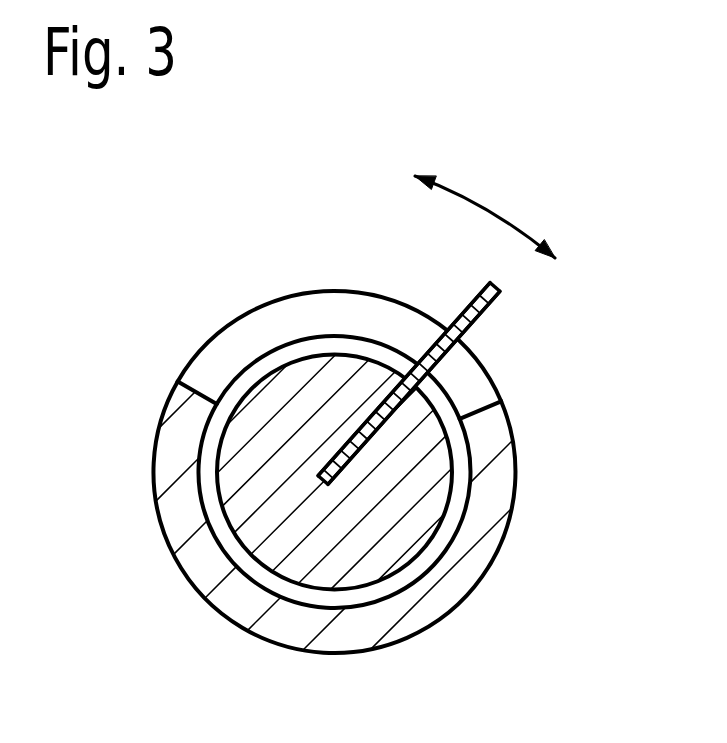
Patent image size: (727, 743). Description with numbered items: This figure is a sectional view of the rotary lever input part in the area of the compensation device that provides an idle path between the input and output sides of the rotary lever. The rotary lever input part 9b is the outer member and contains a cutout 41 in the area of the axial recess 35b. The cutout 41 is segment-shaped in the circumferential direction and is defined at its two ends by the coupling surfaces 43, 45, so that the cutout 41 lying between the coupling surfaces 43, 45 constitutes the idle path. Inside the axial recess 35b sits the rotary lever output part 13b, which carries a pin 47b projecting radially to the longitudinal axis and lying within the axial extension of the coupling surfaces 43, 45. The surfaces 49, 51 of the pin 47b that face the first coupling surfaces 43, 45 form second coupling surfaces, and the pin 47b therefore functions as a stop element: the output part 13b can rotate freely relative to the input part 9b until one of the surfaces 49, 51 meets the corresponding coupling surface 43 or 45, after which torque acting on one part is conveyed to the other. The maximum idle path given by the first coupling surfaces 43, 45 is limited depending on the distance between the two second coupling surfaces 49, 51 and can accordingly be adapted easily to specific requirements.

The rotary lever input part 9b is at (519, 488).
The rotary lever output part 13b is at (330, 567).
The axial recess 35b is at (442, 537).
The cutout 41 is at (272, 313).
The coupling surface 43 is at (202, 392).
The coupling surface 45 is at (483, 394).
The pin 47b is at (500, 286).
The surface of the pin 49 is at (423, 352).
The surface of the pin 51 is at (445, 361).